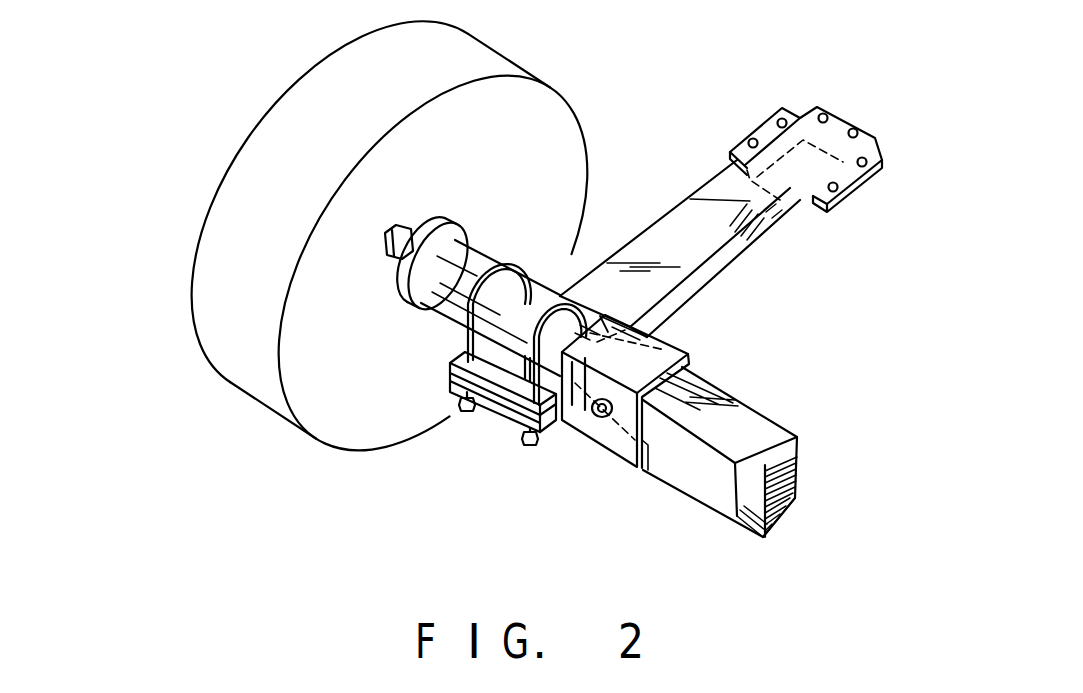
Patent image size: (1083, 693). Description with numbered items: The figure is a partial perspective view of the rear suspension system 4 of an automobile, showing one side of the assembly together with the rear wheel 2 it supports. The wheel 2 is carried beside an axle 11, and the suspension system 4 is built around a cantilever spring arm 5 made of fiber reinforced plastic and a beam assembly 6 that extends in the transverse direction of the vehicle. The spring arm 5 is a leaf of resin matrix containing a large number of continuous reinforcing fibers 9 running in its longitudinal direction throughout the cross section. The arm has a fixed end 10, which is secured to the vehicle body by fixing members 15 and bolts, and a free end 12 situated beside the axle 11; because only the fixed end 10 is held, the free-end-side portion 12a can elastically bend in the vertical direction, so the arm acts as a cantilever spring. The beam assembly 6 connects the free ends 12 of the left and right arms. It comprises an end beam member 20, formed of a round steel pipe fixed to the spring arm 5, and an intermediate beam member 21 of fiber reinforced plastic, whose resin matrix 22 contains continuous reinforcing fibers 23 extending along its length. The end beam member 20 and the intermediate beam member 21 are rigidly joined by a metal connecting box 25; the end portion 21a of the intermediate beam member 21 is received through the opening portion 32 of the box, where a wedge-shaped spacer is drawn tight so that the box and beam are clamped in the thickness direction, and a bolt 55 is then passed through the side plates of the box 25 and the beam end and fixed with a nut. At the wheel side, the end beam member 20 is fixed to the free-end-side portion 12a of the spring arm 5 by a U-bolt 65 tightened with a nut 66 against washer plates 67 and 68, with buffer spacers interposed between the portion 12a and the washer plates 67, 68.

The rear wheel 2 is at (225, 382).
The suspension system 4 is at (737, 76).
The cantilever spring arm 5 is at (690, 196).
The beam assembly 6 is at (758, 540).
The continuous reinforcing fibers 9 is at (772, 226).
The fixed end 10 is at (838, 127).
The axle 11 is at (403, 226).
The free end 12 is at (497, 406).
The free-end-side portion 12a is at (620, 304).
The fixing member 15 is at (855, 183).
The end beam member 20 is at (477, 270).
The intermediate beam member 21 is at (707, 482).
The end portion 21a is at (690, 348).
The resin matrix 22 is at (797, 484).
The continuous reinforcing fibers 23 is at (797, 452).
The connecting box 25 is at (617, 456).
The opening portion 32 is at (648, 448).
The bolt 55 is at (597, 418).
The U-bolt 65 is at (518, 272).
The nut 66 is at (463, 408).
The washer plate 67 is at (452, 362).
The washer plate 68 is at (455, 390).